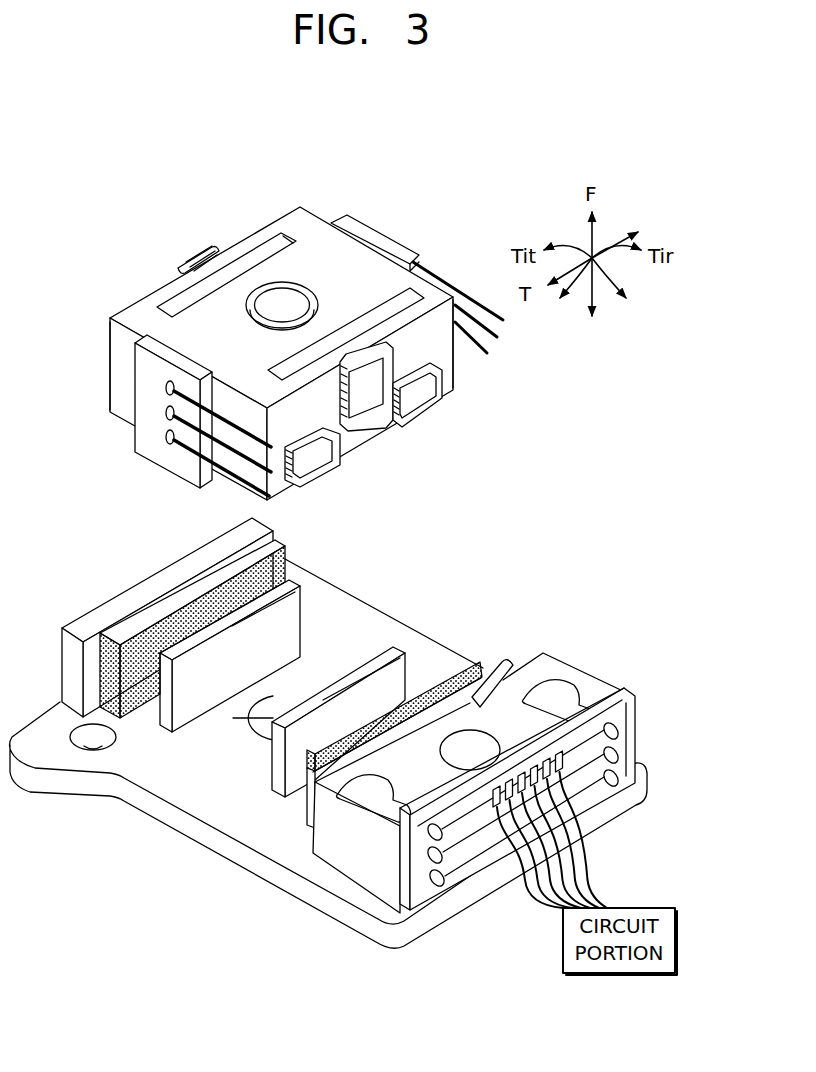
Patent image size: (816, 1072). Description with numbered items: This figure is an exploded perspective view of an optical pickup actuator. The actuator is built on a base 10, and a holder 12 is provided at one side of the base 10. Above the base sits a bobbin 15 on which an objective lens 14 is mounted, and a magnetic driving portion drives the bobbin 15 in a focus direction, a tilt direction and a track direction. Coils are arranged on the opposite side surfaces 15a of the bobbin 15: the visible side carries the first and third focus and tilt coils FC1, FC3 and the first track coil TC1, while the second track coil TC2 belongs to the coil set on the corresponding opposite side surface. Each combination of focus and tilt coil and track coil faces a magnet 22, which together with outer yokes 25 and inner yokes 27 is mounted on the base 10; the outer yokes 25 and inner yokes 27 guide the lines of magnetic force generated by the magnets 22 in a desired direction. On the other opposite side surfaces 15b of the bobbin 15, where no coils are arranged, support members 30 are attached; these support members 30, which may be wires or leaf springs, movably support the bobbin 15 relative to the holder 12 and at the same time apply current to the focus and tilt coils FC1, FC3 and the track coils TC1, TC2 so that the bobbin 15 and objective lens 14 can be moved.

The base 10 is at (183, 826).
The holder 12 is at (350, 862).
The objective lens 14 is at (283, 296).
The bobbin 15 is at (312, 232).
The opposite side surfaces 15a is at (457, 372).
The other opposite side surfaces 15b is at (119, 380).
The magnet 22 is at (168, 590).
The outer yoke 25 is at (118, 602).
The inner yoke 27 is at (296, 595).
The support member 30 is at (233, 482).
The first track coil TC1 is at (360, 410).
The second track coil TC2 is at (197, 258).
The first focus and tilt coil FC1 is at (344, 458).
The third focus and tilt coil FC3 is at (446, 397).